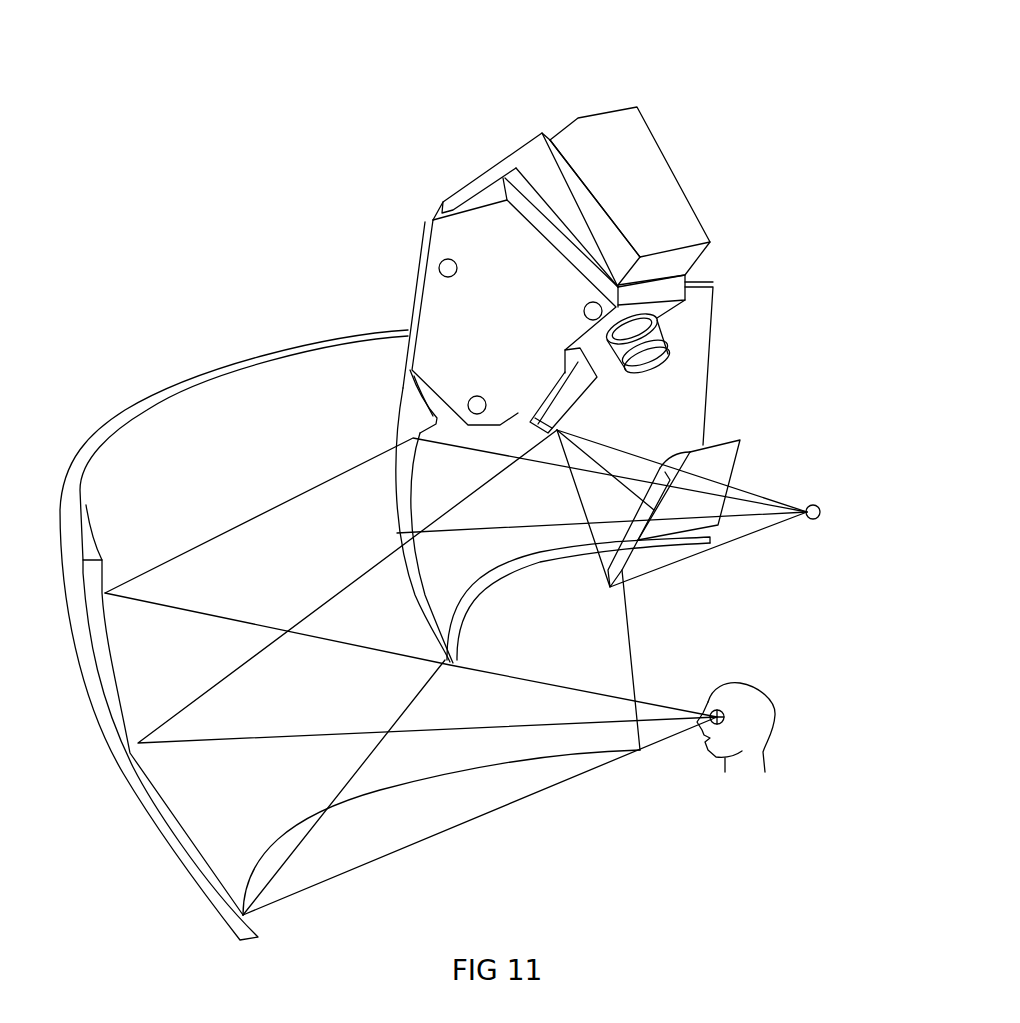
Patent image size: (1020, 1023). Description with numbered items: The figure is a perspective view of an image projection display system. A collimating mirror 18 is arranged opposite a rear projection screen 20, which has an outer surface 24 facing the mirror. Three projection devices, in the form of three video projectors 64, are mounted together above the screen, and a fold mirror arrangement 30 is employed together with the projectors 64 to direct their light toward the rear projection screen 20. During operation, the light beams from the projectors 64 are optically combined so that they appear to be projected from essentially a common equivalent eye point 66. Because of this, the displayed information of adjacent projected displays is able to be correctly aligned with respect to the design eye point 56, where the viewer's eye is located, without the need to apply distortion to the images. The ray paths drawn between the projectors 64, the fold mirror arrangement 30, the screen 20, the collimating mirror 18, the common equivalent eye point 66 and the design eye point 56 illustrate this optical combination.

The collimating mirror 18 is at (228, 420).
The outer surface 24 is at (417, 437).
The rear projection screen 20 is at (476, 502).
The video projectors 64 is at (453, 227).
The fold mirror arrangement 30 is at (685, 437).
The common equivalent eye point 66 is at (820, 508).
The design eye point 56 is at (723, 712).